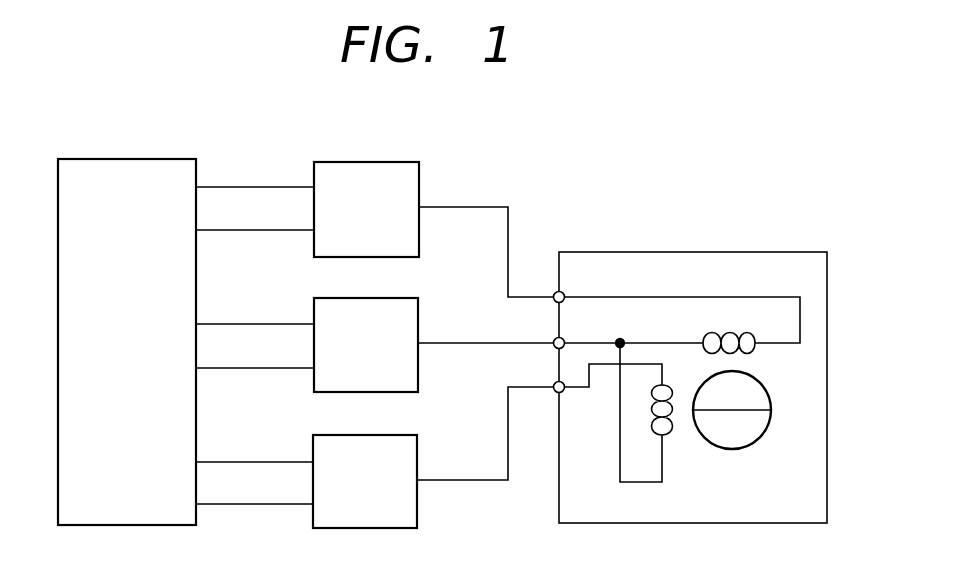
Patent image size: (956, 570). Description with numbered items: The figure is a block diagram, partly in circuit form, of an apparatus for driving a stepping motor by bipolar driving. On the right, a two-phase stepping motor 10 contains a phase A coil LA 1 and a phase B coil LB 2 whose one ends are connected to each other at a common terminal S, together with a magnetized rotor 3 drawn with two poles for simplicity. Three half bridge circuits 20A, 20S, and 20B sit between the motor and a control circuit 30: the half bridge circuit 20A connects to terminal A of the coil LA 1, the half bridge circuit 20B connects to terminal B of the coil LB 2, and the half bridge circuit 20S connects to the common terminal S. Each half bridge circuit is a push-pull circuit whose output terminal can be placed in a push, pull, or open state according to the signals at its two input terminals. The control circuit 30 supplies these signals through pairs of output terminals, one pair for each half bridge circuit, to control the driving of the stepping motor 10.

The control circuit 30 is at (170, 158).
The half bridge circuit 20A is at (420, 171).
The half bridge circuit 20S is at (419, 313).
The half bridge circuit 20B is at (418, 448).
The two-phase stepping motor 10 is at (685, 365).
The coil LA 1 is at (712, 335).
The coil LB 2 is at (668, 435).
The magnetized rotor 3 is at (769, 388).